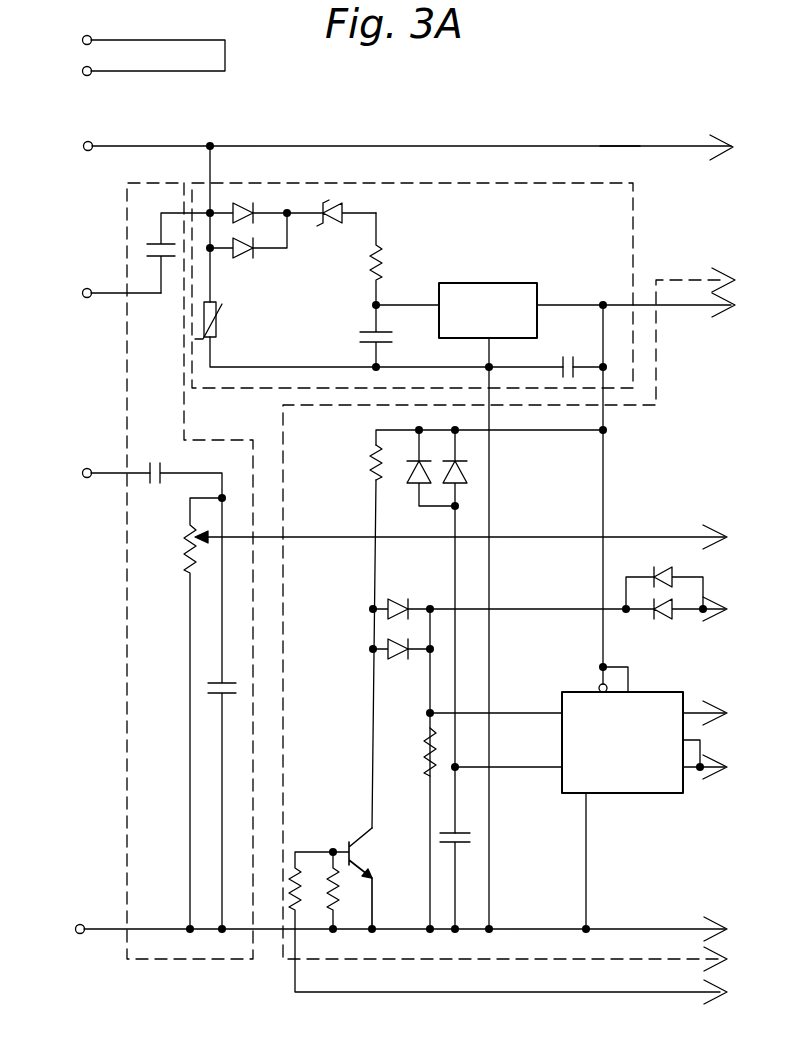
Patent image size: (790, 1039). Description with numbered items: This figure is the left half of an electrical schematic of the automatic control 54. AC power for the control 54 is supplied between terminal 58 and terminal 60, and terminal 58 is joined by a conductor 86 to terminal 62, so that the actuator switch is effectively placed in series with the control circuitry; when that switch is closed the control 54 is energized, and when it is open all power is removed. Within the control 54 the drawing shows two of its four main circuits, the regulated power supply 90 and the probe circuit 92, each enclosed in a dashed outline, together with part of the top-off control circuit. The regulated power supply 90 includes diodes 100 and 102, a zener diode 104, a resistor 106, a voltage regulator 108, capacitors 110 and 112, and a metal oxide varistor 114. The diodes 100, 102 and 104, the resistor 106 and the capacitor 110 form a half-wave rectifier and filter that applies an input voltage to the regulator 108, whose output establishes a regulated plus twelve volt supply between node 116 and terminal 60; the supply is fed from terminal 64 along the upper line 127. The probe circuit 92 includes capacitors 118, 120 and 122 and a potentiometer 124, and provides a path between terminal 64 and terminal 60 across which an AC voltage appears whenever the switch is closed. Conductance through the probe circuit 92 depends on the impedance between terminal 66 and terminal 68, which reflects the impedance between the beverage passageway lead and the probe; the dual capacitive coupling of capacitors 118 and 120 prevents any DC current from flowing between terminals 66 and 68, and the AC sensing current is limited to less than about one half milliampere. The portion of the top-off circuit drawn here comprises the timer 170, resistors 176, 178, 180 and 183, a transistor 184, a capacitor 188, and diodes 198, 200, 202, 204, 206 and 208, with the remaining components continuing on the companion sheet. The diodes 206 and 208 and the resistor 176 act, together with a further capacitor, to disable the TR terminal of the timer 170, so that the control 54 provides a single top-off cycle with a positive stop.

The automatic control 54 is at (469, 118).
The terminal 58 is at (84, 38).
The terminal 60 is at (79, 924).
The terminal 62 is at (84, 70).
The terminal 64 is at (88, 142).
The terminal 66 is at (86, 290).
The terminal 68 is at (85, 469).
The conductor 86 is at (225, 52).
The regulated power supply 90 is at (633, 205).
The probe circuit 92 is at (127, 576).
The diode 100 is at (238, 206).
The diode 102 is at (243, 256).
The zener diode 104 is at (330, 222).
The resistor 106 is at (380, 250).
The voltage regulator 108 is at (487, 283).
The capacitor 110 is at (366, 328).
The capacitor 112 is at (560, 362).
The metal oxide varistor 114 is at (222, 325).
The node 116 is at (574, 303).
The capacitor 118 is at (152, 242).
The capacitor 120 is at (150, 482).
The capacitor 122 is at (214, 681).
The potentiometer 124 is at (190, 544).
The supply voltage line 127 is at (630, 145).
The timer 170 is at (620, 794).
The resistor 176 is at (426, 760).
The resistor 178 is at (508, 928).
The resistor 180 is at (338, 896).
The resistor 183 is at (370, 472).
The transistor 184 is at (366, 874).
The capacitor 188 is at (470, 836).
The diode 198 is at (412, 484).
The diode 200 is at (466, 470).
The diode 202 is at (394, 598).
The diode 204 is at (398, 660).
The diode 206 is at (665, 564).
The diode 208 is at (662, 620).